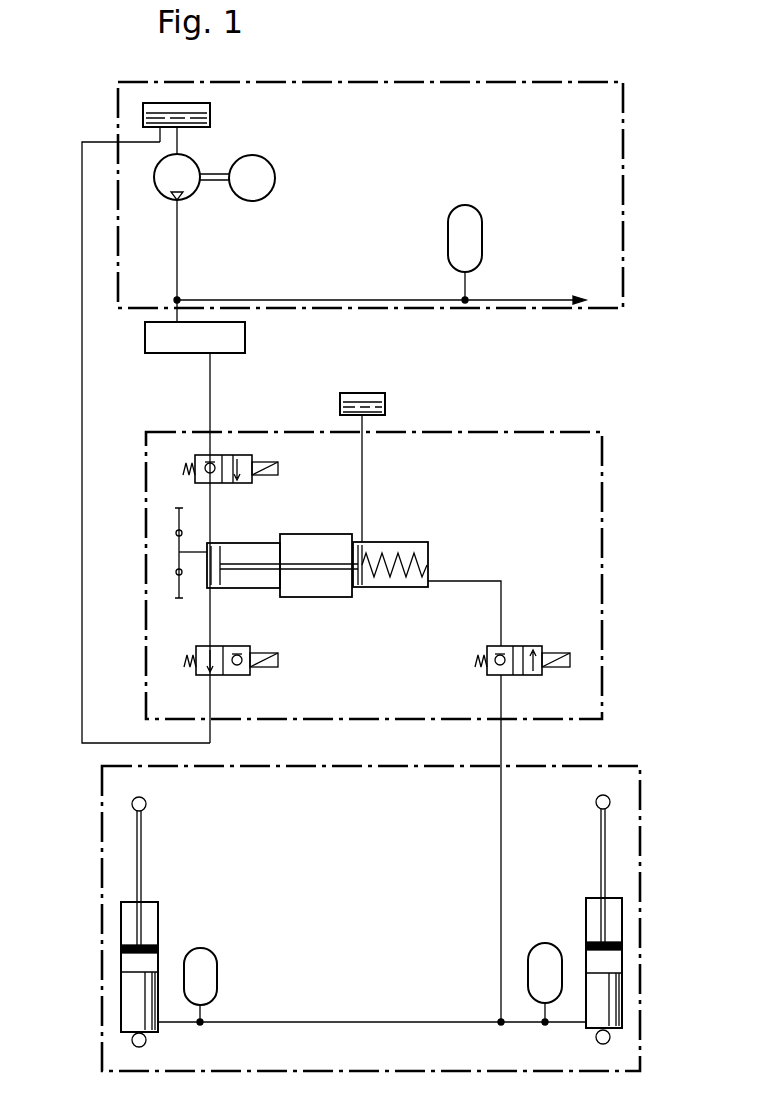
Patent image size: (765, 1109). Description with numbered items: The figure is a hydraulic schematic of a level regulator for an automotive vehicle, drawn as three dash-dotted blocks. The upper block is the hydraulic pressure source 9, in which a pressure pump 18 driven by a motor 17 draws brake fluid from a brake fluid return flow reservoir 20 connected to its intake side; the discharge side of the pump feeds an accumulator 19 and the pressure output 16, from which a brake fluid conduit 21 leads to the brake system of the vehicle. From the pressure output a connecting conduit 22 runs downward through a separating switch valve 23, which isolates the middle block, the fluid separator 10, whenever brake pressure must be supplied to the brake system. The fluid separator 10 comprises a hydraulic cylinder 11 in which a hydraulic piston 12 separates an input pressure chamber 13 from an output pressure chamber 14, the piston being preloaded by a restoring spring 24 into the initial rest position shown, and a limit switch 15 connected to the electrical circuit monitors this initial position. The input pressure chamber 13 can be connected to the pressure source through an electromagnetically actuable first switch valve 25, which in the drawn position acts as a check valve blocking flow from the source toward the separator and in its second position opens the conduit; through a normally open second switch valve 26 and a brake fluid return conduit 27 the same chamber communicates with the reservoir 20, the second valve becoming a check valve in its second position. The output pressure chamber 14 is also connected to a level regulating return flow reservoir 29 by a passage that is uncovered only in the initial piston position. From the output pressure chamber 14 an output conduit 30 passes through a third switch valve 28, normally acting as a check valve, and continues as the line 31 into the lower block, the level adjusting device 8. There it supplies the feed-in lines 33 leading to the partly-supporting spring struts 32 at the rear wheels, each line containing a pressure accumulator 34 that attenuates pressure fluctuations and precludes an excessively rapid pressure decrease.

The level adjusting device 8 is at (641, 822).
The hydraulic pressure source 9 is at (623, 190).
The fluid separator 10 is at (602, 530).
The hydraulic cylinder 11 is at (282, 557).
The hydraulic piston 12 is at (315, 585).
The input pressure chamber 13 is at (211, 590).
The output pressure chamber 14 is at (392, 565).
The limit switch 15 is at (179, 552).
The pressure output 16 is at (174, 298).
The motor 17 is at (270, 170).
The pressure pump 18 is at (185, 170).
The accumulator 19 is at (474, 242).
The brake fluid return flow reservoir 20 is at (210, 113).
The brake fluid conduit 21 is at (545, 299).
The connecting conduit 22 is at (211, 387).
The separating switch valve 23 is at (245, 336).
The restoring spring 24 is at (390, 580).
The first switch valve 25 is at (238, 483).
The second switch valve 26 is at (243, 675).
The brake fluid return conduit 27 is at (83, 462).
The third switch valve 28 is at (533, 646).
The level regulating return flow reservoir 29 is at (386, 403).
The output conduit 30 is at (466, 581).
The supply line 31 is at (500, 860).
The partly-supporting spring struts 32 is at (158, 912).
The feed-in lines 33 is at (372, 1025).
The pressure accumulator 34 is at (207, 960).